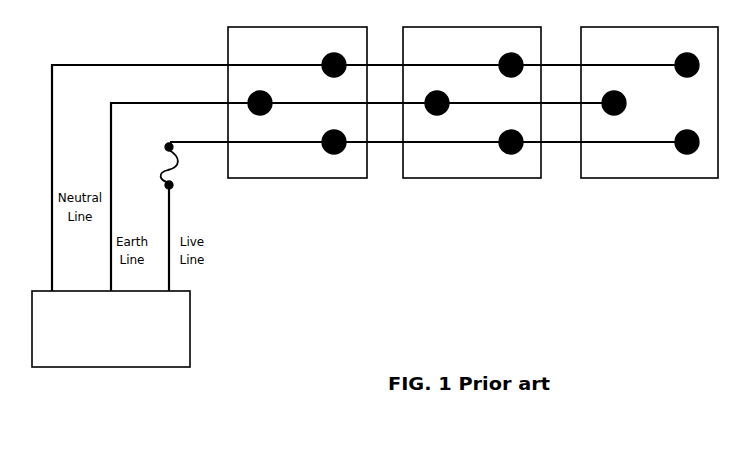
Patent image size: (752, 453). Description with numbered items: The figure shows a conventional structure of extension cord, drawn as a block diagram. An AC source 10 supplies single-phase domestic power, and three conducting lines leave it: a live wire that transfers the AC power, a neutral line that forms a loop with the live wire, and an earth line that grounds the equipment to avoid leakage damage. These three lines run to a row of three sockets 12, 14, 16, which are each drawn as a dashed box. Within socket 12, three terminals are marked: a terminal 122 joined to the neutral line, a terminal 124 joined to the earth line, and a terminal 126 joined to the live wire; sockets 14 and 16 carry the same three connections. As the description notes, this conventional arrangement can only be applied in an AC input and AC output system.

The AC source 10 is at (190, 310).
The first socket 12 is at (283, 178).
The second socket 14 is at (463, 178).
The third socket 16 is at (650, 178).
The neutral terminal of socket 122 is at (330, 55).
The earth terminal of socket 124 is at (254, 95).
The live terminal of socket 126 is at (327, 131).